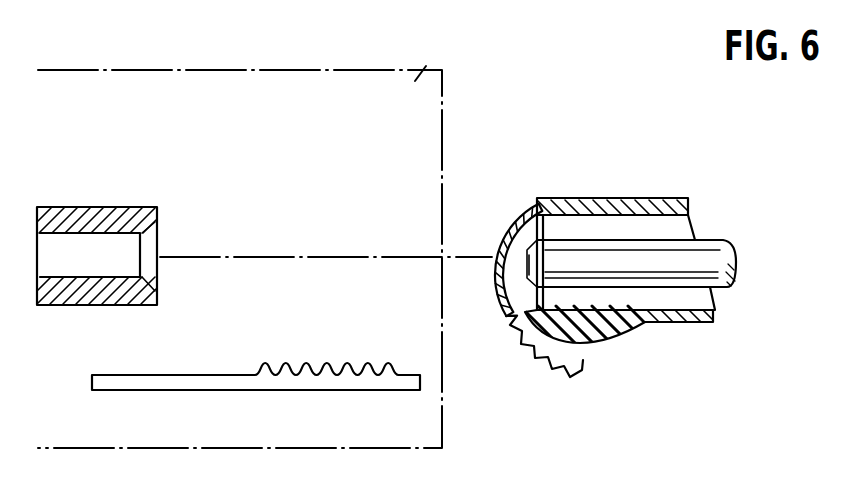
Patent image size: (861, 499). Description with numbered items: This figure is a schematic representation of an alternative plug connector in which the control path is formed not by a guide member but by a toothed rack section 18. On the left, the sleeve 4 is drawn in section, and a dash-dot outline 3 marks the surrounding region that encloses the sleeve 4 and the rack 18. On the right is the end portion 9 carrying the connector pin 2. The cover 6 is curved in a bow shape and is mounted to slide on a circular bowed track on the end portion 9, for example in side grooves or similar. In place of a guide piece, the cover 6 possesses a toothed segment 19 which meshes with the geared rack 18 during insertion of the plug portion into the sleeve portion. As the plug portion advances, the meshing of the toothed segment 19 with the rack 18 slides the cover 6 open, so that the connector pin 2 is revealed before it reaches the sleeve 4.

The connector pin 2 is at (715, 257).
The measuring head housing 3 is at (428, 68).
The sleeve 4 is at (112, 218).
The cover 6 is at (514, 244).
The end portion 9 is at (597, 205).
The toothed rack section 18 is at (337, 378).
The toothed segment 19 is at (563, 372).